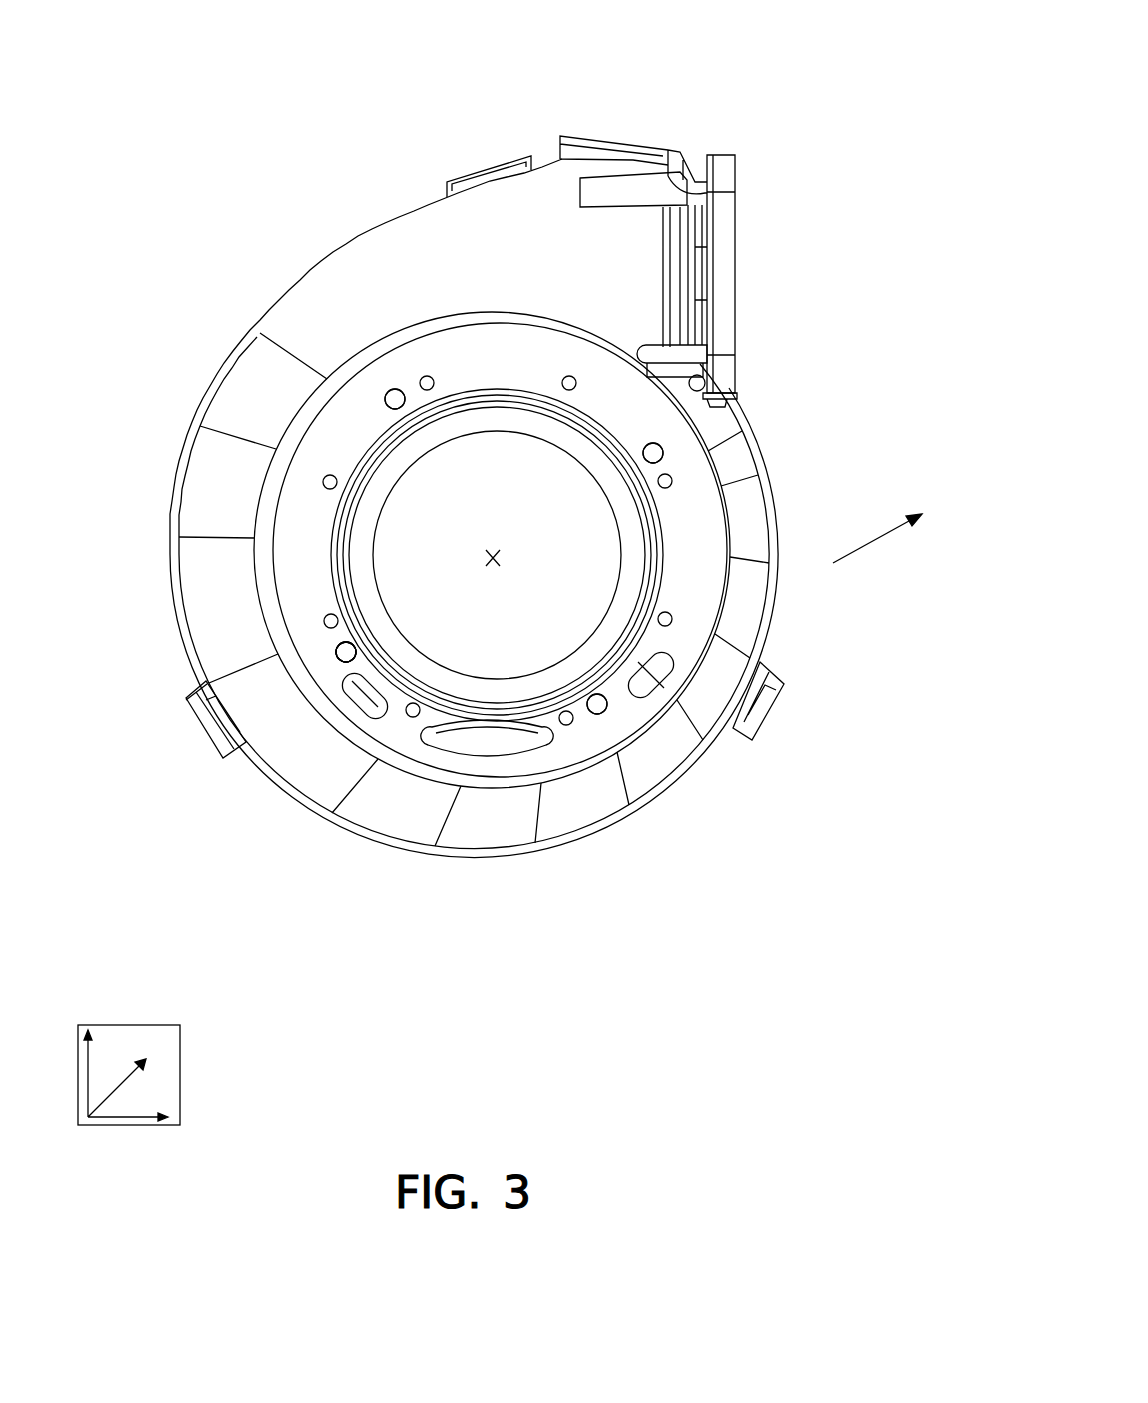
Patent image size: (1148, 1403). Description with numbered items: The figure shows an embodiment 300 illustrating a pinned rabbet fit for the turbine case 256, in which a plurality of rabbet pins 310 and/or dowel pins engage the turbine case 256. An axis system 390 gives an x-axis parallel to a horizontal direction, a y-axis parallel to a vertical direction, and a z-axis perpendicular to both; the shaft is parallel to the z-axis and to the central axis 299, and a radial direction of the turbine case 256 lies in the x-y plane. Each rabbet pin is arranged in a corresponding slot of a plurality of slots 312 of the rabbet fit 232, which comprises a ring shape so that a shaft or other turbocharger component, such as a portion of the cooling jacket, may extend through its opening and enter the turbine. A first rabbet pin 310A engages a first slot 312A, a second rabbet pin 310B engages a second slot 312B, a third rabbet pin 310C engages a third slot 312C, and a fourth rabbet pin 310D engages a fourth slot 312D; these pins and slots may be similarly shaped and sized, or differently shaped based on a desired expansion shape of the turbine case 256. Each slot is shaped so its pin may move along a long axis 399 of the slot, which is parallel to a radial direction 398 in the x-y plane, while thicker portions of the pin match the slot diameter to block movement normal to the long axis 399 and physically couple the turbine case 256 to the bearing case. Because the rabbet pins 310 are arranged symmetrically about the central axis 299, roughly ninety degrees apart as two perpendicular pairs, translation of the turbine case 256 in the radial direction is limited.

The embodiment 300 is at (755, 50).
The turbine case 256 is at (733, 153).
The rabbet fit 232 is at (460, 322).
The central axis 299 is at (491, 553).
The rabbet pins 310 is at (330, 650).
The first rabbet pin 310A is at (343, 663).
The second rabbet pin 310B is at (389, 392).
The third rabbet pin 310C is at (645, 445).
The fourth rabbet pin 310D is at (598, 714).
The slots 312 is at (347, 637).
The first slot 312A is at (355, 645).
The second slot 312B is at (403, 413).
The third slot 312C is at (643, 465).
The fourth slot 312D is at (592, 695).
The axis system 390 is at (180, 1047).
The radial direction 398 is at (895, 530).
The long axis 399 is at (745, 387).